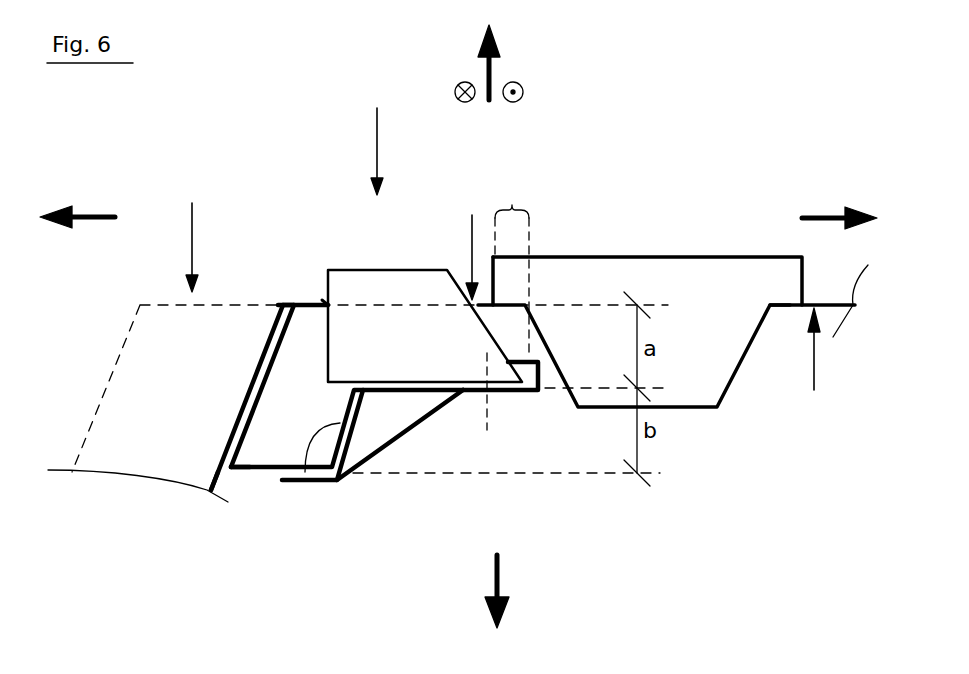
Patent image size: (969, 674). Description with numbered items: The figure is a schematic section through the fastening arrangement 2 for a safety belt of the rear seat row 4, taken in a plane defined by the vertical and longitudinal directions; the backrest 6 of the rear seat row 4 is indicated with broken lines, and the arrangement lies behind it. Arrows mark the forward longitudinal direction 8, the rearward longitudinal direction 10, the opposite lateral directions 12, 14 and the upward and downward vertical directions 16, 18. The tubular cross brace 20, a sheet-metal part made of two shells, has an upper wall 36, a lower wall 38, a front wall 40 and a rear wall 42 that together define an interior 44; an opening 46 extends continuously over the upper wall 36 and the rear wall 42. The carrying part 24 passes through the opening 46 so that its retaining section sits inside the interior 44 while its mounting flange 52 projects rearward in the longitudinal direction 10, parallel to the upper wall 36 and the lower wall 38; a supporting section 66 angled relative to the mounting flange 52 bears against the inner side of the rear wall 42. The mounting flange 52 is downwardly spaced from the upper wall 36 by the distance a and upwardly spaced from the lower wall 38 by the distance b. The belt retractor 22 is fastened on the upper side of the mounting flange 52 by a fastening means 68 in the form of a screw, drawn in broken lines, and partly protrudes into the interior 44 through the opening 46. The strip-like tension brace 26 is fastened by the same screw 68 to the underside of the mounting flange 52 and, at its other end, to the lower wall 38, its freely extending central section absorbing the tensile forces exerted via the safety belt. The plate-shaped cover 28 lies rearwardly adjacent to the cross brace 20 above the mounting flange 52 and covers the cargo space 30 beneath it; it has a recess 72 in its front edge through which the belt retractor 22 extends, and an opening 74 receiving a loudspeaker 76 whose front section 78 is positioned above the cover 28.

The fastening arrangement 2 is at (379, 137).
The rear seat row 4 is at (192, 235).
The backrest 6 is at (130, 335).
The longitudinal direction 8 is at (92, 213).
The longitudinal direction 10 is at (828, 215).
The lateral direction 12 is at (455, 92).
The lateral direction 14 is at (523, 92).
The vertical direction 16 is at (485, 78).
The vertical direction 18 is at (500, 576).
The cross brace 20 is at (284, 297).
The belt retractor 22 is at (377, 297).
The carrying part 24 is at (255, 408).
The tension brace 26 is at (398, 437).
The cover 28 is at (815, 364).
The cargo space 30 is at (724, 468).
The upper wall 36 is at (308, 302).
The lower wall 38 is at (255, 478).
The front wall 40 is at (248, 382).
The rear wall 42 is at (343, 427).
The interior 44 is at (240, 477).
The opening 46 is at (320, 285).
The mounting flange 52 is at (427, 392).
The supporting section 66 is at (300, 485).
The fastening means 68 is at (487, 418).
The recess 72 is at (472, 244).
The opening 74 is at (768, 302).
The loudspeaker 76 is at (642, 275).
The front section 78 is at (511, 265).